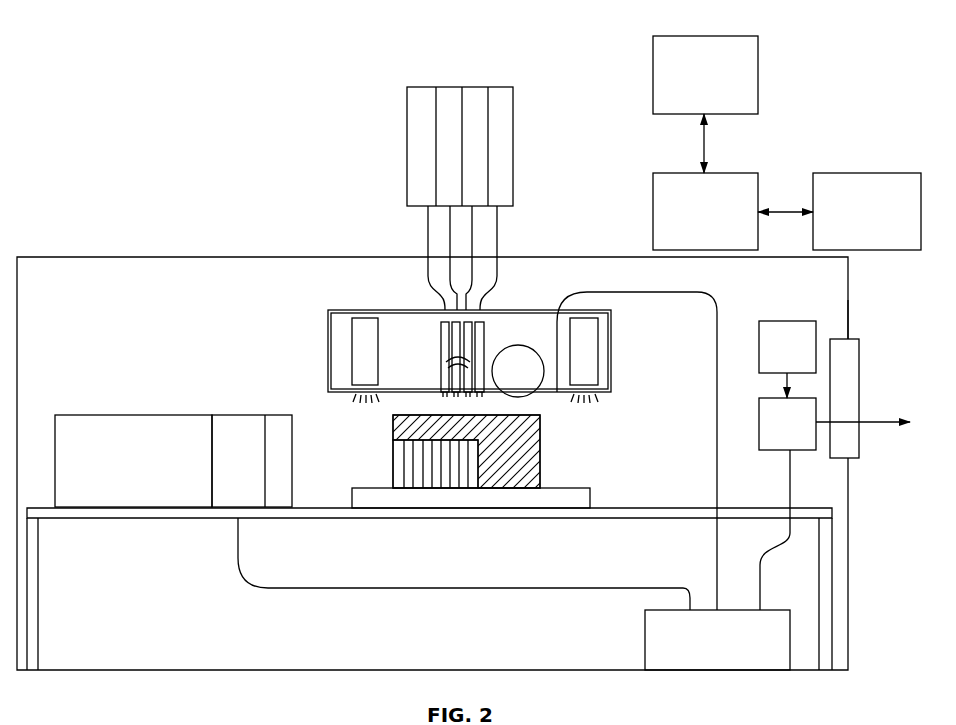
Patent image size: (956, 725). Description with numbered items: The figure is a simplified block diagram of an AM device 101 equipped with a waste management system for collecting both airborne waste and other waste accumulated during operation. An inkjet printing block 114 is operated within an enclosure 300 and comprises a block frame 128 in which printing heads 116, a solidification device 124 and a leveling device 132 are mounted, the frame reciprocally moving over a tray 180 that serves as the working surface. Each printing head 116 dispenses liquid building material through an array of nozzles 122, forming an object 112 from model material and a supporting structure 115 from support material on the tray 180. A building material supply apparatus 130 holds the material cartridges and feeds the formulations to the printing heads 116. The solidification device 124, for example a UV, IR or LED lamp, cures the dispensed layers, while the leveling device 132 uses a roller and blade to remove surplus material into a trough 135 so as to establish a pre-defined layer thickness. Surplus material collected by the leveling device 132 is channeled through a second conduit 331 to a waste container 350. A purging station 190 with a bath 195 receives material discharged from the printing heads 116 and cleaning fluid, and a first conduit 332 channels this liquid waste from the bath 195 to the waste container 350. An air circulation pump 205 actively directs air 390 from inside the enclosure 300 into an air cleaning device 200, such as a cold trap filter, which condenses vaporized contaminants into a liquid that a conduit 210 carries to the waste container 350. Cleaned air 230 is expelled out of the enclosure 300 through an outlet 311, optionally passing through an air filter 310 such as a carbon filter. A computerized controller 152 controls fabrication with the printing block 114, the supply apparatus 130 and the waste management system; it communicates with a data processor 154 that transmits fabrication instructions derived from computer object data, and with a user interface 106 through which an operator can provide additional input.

The AM device 101 is at (177, 113).
The enclosure 300 is at (100, 256).
The air 390 is at (62, 296).
The building material supply apparatus 130 is at (397, 157).
The inkjet printing block 114 is at (349, 300).
The solidification device 124 is at (359, 367).
The block frame 128 is at (328, 380).
The bath 195 is at (245, 423).
The printing heads 116 is at (439, 372).
The leveling device 132 is at (518, 336).
The trough 135 is at (561, 383).
The array of nozzles 122 is at (432, 398).
The purging station 190 is at (133, 461).
The tray 180 is at (366, 509).
The supporting structure 115 is at (445, 475).
The object 112 is at (508, 475).
The first conduit 332 is at (563, 590).
The second conduit 331 is at (717, 304).
The outlet 311 is at (853, 339).
The air filter 310 is at (860, 374).
The air circulation pump 205 is at (787, 359).
The air cleaning device 200 is at (787, 424).
The air 230 is at (875, 425).
The conduit 210 is at (790, 488).
The waste container 350 is at (717, 640).
The user interface 106 is at (705, 104).
The computerized controller 152 is at (733, 211).
The data processor 154 is at (867, 211).